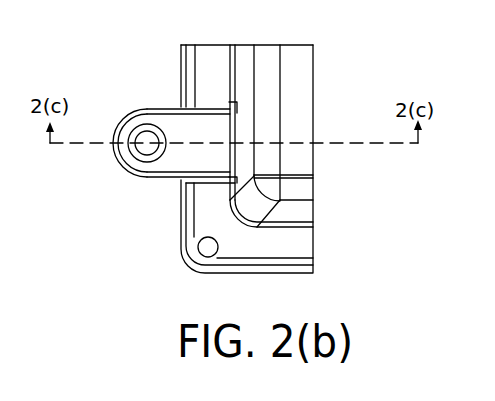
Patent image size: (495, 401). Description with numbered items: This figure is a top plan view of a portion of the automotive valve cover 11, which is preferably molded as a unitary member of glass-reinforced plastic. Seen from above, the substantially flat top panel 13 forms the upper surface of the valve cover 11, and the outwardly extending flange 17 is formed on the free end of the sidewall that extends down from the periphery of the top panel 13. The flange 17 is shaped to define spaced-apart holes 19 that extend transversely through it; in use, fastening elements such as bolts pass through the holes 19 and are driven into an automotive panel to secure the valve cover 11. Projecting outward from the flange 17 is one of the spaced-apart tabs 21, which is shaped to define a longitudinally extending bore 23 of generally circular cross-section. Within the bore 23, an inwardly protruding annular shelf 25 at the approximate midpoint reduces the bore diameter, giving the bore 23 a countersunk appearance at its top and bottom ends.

The automotive valve cover 11 is at (156, 231).
The top panel 13 is at (303, 72).
The flange 17 is at (305, 244).
The holes 19 is at (212, 252).
The tab 21 is at (115, 123).
The bore 23 is at (148, 136).
The annular shelf 25 is at (138, 166).